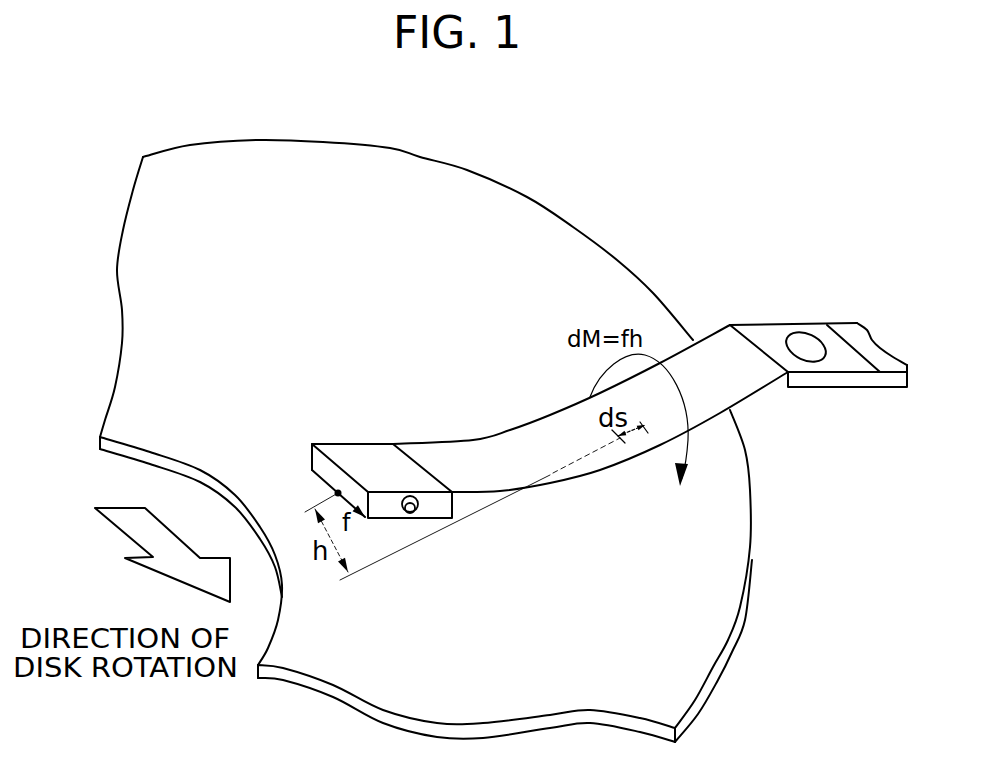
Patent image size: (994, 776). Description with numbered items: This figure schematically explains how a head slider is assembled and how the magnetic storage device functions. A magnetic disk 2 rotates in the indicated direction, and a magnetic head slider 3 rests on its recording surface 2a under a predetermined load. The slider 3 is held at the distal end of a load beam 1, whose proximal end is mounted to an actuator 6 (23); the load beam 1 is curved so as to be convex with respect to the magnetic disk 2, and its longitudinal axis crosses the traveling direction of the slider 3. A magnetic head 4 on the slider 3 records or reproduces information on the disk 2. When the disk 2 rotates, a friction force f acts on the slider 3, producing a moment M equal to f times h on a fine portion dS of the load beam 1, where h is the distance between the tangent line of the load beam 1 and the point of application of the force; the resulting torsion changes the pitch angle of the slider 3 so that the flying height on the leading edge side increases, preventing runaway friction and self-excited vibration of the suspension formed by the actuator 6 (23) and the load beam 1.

The load beam 1 is at (718, 342).
The magnetic disk 2 is at (426, 440).
The recording surface 2a is at (517, 210).
The magnetic head slider 3 is at (362, 455).
The magnetic head 4 is at (412, 513).
The actuator 23 is at (818, 403).
The actuator 6 is at (833, 380).